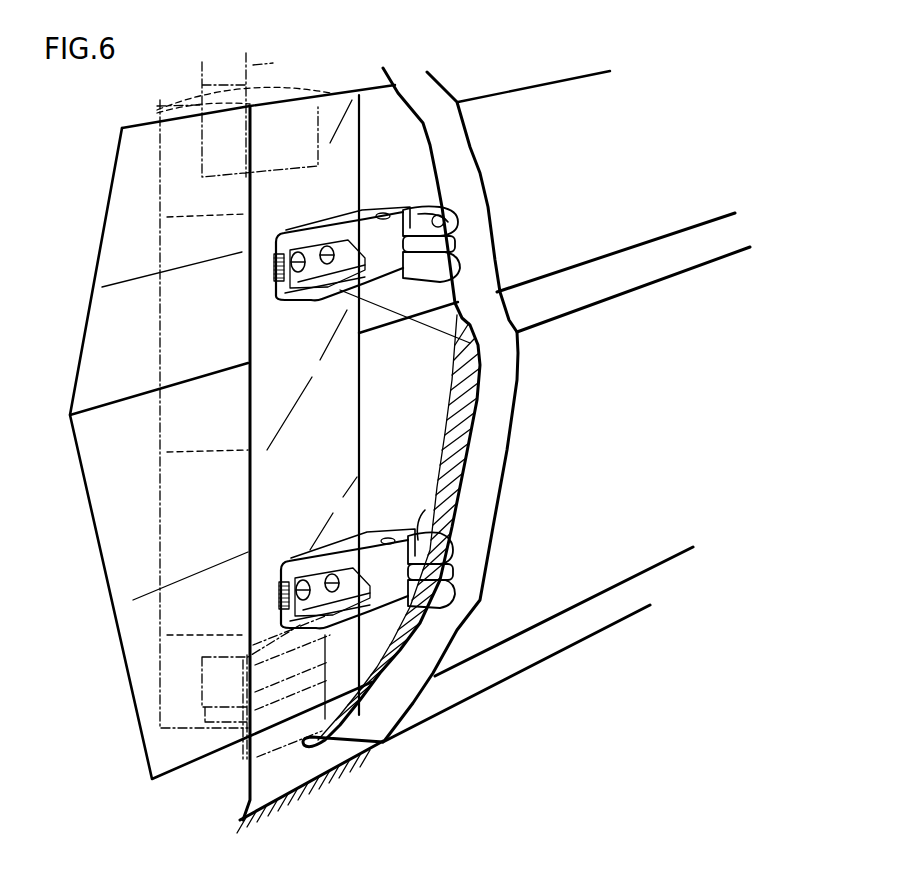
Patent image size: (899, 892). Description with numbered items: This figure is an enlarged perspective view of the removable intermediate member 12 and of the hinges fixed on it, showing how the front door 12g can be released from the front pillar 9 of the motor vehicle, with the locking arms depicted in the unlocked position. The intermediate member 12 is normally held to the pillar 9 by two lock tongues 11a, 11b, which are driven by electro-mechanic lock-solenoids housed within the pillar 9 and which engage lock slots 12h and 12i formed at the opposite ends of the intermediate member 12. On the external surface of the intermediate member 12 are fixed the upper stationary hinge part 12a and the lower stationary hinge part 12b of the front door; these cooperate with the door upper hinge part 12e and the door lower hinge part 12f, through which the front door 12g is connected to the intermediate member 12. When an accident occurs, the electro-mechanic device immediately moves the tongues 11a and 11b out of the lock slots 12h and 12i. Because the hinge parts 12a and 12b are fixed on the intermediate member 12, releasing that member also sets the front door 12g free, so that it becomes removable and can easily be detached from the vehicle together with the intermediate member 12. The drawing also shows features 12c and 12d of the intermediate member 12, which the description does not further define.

The front pillar 9 is at (108, 418).
The lock tongue 11a is at (236, 62).
The lock tongue 11b is at (232, 747).
The intermediate member 12 is at (323, 378).
The upper stationary hinge part 12a is at (324, 281).
The lower stationary hinge part 12b is at (383, 600).
The upper opening 12c is at (287, 94).
The lower opening 12d is at (241, 691).
The door upper hinge part 12e is at (455, 205).
The door lower hinge part 12f is at (425, 510).
The front door 12g is at (590, 141).
The lock slot 12h is at (268, 147).
The lock slot 12i is at (226, 676).